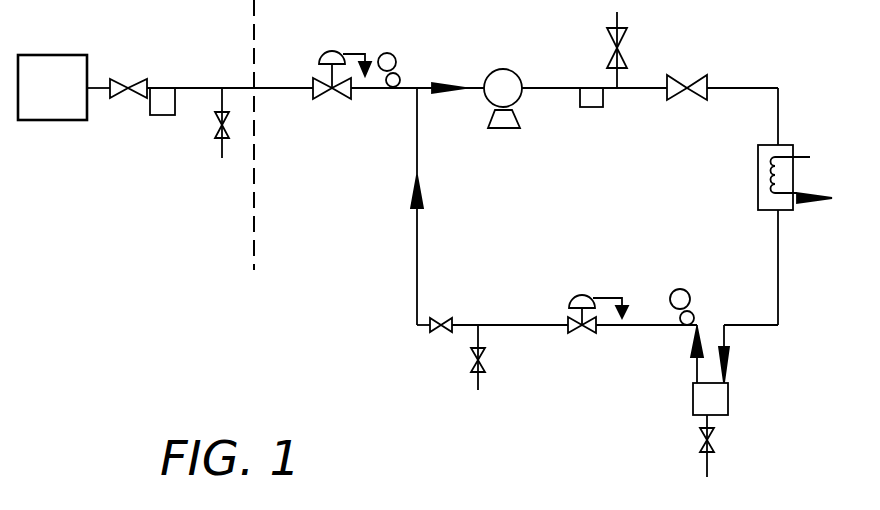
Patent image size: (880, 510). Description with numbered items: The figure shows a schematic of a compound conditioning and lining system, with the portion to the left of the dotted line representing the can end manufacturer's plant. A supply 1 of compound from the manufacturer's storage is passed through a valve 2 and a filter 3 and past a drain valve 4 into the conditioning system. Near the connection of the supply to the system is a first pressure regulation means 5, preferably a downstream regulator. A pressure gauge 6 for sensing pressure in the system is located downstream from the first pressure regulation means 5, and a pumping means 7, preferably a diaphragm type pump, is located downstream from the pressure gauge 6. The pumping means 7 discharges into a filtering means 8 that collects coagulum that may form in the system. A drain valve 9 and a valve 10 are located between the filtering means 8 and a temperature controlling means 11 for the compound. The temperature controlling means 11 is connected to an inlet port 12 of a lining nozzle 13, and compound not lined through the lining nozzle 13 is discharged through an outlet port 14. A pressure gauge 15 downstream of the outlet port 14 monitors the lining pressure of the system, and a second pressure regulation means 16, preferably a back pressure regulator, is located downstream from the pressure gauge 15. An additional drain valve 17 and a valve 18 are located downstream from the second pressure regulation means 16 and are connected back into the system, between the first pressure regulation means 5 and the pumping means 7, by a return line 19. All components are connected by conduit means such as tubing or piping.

The supply 1 is at (58, 55).
The valve 2 is at (127, 94).
The filter 3 is at (163, 88).
The drain valve 4 is at (216, 126).
The first pressure regulation means 5 is at (332, 100).
The pressure gauge 6 is at (390, 53).
The pumping means 7 is at (503, 128).
The filtering means 8 is at (592, 107).
The drain valve 9 is at (624, 48).
The valve 10 is at (688, 82).
The temperature controlling means 11 is at (795, 187).
The inlet port 12 is at (726, 337).
The lining nozzle 13 is at (713, 440).
The outlet port 14 is at (695, 366).
The pressure gauge 15 is at (683, 289).
The second pressure regulation means 16 is at (582, 296).
The drain valve 17 is at (486, 361).
The valve 18 is at (438, 336).
The return line 19 is at (419, 236).